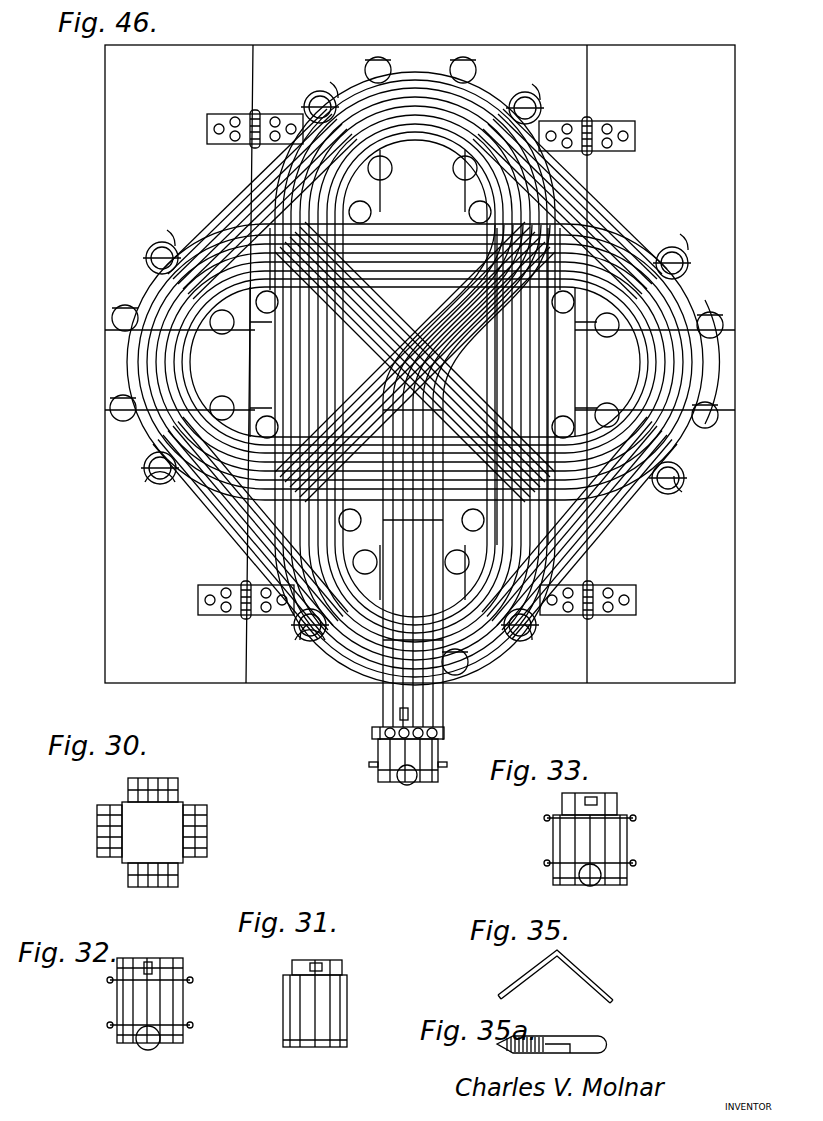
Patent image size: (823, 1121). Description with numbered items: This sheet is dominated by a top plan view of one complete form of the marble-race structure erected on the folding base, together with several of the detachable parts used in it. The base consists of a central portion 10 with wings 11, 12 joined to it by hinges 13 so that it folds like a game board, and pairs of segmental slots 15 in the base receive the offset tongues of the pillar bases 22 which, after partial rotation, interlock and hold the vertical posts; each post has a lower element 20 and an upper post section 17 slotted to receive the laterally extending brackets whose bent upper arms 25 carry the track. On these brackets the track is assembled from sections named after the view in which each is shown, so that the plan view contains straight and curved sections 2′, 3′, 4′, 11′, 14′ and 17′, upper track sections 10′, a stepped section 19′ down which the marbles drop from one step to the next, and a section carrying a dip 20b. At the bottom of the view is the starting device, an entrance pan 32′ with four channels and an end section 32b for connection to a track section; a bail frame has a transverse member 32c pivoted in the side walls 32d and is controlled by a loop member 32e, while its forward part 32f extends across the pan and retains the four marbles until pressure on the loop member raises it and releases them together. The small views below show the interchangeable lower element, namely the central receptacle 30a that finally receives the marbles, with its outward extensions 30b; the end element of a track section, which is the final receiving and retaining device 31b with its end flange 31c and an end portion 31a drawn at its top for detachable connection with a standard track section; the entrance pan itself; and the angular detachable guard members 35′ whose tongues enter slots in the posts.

In FIG. 46, the central portion 10 is at (325, 45).
In FIG. 46, the wing 11 is at (105, 104).
In FIG. 46, the wing 12 is at (735, 137).
In FIG. 46, the hinge 13 is at (228, 118).
In FIG. 46, the segmental slot 15 is at (455, 60).
In FIG. 46, the upper post section 17 is at (312, 95).
In FIG. 46, the bracket arm 25 is at (336, 96).
In FIG. 46, the pillar base 22 is at (542, 110).
In FIG. 46, the track section 11′ is at (245, 175).
In FIG. 46, the track section 2′ is at (428, 125).
In FIG. 46, the track section 3′ is at (160, 410).
In FIG. 46, the dip 20b is at (408, 238).
In FIG. 46, the track section 14′ is at (400, 270).
In FIG. 46, the track section 17′ is at (372, 340).
In FIG. 46, the upper track section 10′ is at (300, 358).
In FIG. 46, the stepped track section 19′ is at (520, 430).
In FIG. 46, the track section 4′ is at (660, 300).
In FIG. 46, the lower post element 20 is at (148, 476).
In FIG. 46, the end section 32b is at (440, 718).
In FIG. 32, the end section 32b is at (180, 962).
In FIG. 46, the forward bail part 32f is at (398, 716).
In FIG. 32, the forward bail part 32f is at (148, 962).
In FIG. 46, the pan 32′ is at (440, 752).
In FIG. 32, the pan 32′ is at (160, 1005).
In FIG. 46, the side wall 32d is at (368, 766).
In FIG. 32, the side wall 32d is at (185, 1020).
In FIG. 46, the transverse member 32c is at (380, 782).
In FIG. 32, the transverse member 32c is at (178, 1040).
In FIG. 46, the loop member 32e is at (412, 784).
In FIG. 32, the loop member 32e is at (150, 1050).
In FIG. 30, the central receptacle 30a is at (170, 815).
In FIG. 30, the extension 30b is at (178, 784).
In FIG. 31, the end connector tab 31a is at (335, 962).
In FIG. 31, the final receiving and retaining device 31b is at (320, 1005).
In FIG. 31, the end flange 31c is at (308, 1047).
In FIG. 35, the guard member 35′ is at (595, 982).
In FIG. 35A, the guard member 35′ is at (600, 1044).